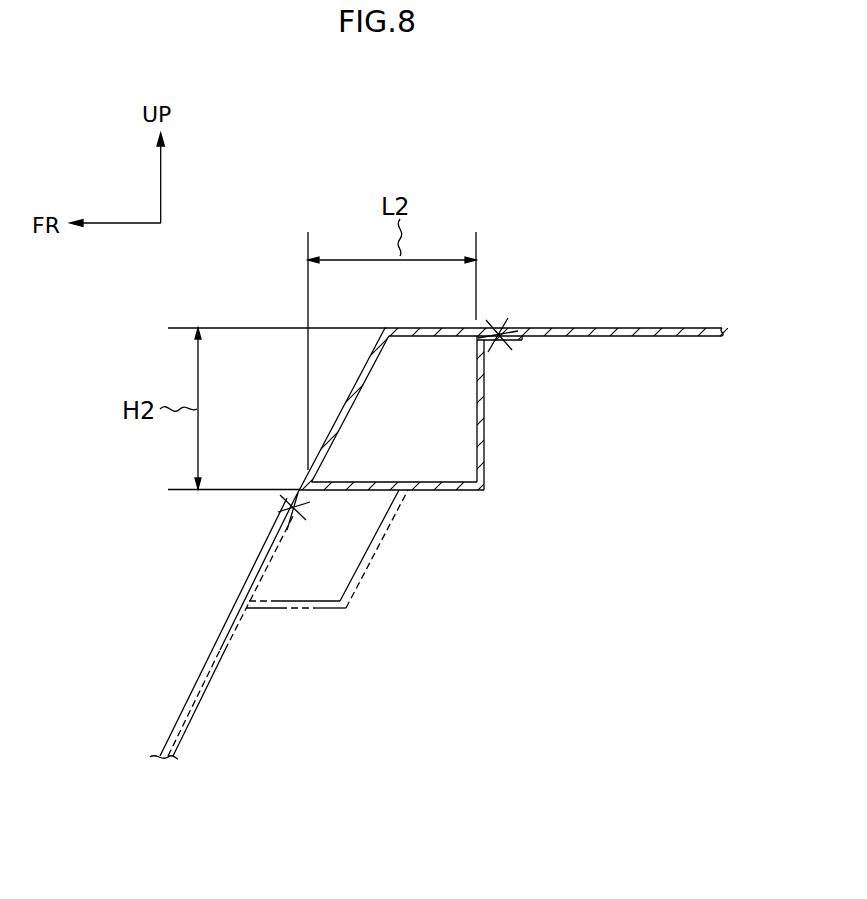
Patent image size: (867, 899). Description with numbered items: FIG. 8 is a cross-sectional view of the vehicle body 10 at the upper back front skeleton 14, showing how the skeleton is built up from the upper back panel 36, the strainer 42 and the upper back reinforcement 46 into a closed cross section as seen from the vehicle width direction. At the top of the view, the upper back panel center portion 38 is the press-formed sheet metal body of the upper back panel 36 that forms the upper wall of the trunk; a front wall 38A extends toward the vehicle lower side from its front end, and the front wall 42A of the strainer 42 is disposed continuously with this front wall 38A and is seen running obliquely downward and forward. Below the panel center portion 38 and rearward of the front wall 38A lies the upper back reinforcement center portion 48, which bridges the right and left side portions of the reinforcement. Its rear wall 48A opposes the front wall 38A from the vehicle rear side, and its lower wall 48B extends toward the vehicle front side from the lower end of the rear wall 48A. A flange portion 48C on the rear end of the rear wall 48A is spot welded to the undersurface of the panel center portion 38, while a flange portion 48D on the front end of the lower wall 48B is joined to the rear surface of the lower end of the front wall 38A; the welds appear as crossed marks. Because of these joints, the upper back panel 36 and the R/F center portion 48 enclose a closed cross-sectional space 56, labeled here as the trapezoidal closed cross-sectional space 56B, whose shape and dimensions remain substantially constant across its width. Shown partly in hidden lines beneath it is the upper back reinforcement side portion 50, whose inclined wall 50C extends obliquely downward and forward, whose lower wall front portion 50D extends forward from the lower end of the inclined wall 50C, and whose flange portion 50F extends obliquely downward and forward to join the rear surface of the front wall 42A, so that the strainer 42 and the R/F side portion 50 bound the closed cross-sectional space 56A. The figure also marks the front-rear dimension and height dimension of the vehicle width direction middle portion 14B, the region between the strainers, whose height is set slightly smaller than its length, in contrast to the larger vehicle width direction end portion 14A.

The vehicle body structure 10 is at (533, 250).
The upper back front skeleton 14 is at (609, 409).
The vehicle width direction end portion 14A is at (355, 628).
The vehicle width direction middle portion 14B is at (532, 393).
The upper back panel 36 is at (554, 286).
The upper back panel center portion 38 is at (640, 325).
The front wall 38A is at (342, 408).
The strainer 42 is at (159, 628).
The front wall 42A is at (183, 700).
The upper back reinforcement 46 is at (458, 441).
The upper back reinforcement center portion 48 is at (458, 441).
The rear wall 48A is at (487, 443).
The lower wall 48B is at (436, 493).
The flange portion 48C is at (520, 345).
The flange portion 48D is at (290, 527).
The upper back reinforcement side portion 50 is at (339, 623).
The inclined wall 50C is at (372, 556).
The lower wall front portion 50D is at (308, 610).
The flange portion 50F is at (236, 622).
The filler 56 is at (280, 491).
The closed cross-sectional space 56A is at (275, 566).
The closed cross-sectional space 56B is at (452, 435).